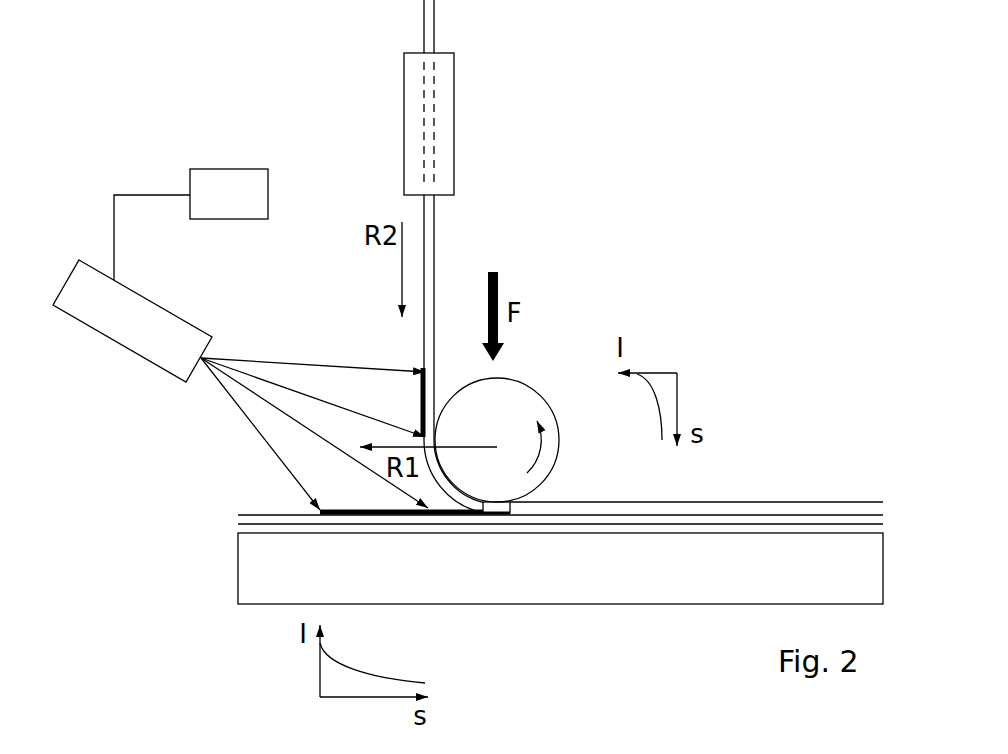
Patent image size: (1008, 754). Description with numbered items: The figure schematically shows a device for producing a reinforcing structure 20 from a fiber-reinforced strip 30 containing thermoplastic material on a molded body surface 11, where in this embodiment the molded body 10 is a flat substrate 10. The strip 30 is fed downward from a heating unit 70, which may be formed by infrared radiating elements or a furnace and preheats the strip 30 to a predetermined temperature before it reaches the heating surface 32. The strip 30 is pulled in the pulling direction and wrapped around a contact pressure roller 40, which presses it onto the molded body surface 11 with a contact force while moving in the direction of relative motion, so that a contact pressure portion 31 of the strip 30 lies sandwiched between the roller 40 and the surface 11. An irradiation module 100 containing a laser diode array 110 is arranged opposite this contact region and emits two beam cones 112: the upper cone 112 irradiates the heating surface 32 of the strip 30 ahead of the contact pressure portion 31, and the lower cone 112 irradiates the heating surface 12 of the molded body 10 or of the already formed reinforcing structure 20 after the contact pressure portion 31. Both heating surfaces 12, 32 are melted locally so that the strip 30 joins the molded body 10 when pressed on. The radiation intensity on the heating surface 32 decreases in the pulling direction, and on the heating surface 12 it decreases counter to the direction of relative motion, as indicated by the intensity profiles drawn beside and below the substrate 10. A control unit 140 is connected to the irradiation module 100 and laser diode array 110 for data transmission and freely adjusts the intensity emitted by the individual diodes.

The molded body 10 is at (258, 568).
The molded body surface 11 is at (722, 532).
The heating surface of the molded body 12 is at (365, 510).
The reinforcing structure 20 is at (236, 513).
The fiber-reinforced strip 30 is at (430, 218).
The contact pressure portion 31 is at (510, 505).
The heating surface of the strip 32 is at (423, 392).
The contact pressure roller 40 is at (513, 398).
The heating unit 70 is at (443, 77).
The irradiation module 100 is at (137, 322).
The laser diode array 110 is at (149, 319).
The beam cone 112 is at (318, 380).
The control unit 140 is at (225, 180).